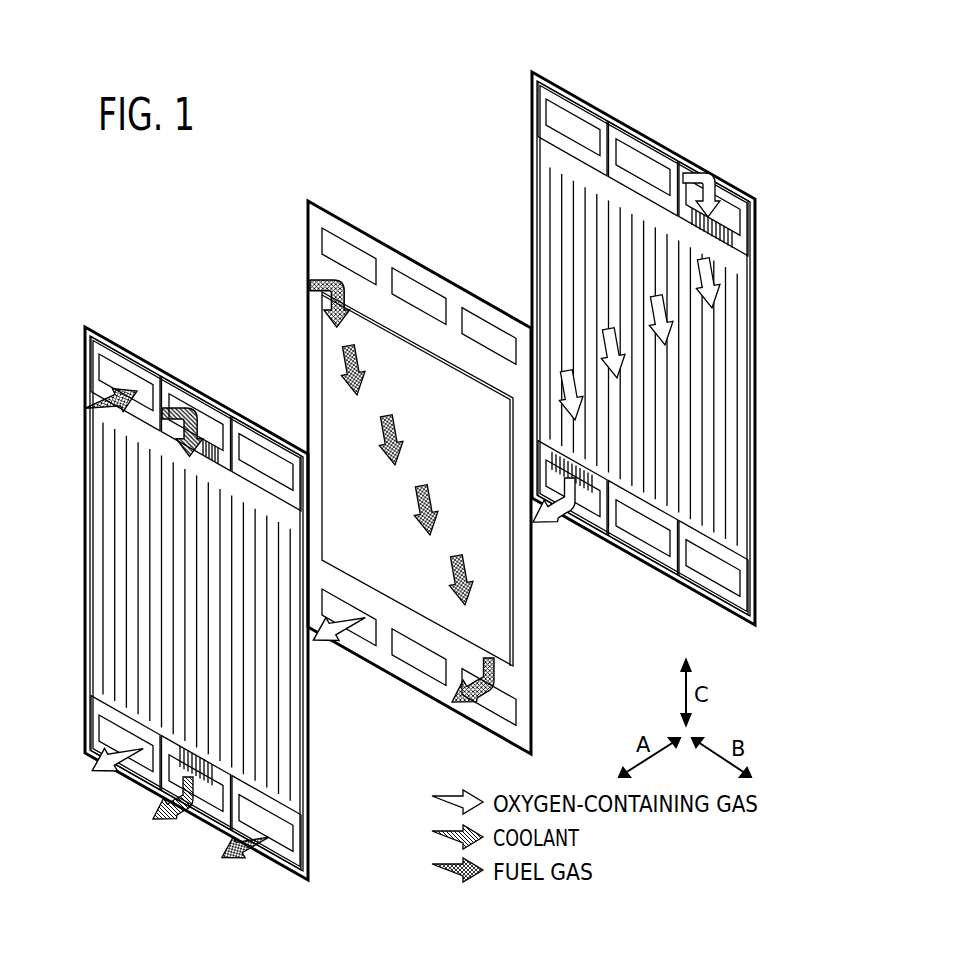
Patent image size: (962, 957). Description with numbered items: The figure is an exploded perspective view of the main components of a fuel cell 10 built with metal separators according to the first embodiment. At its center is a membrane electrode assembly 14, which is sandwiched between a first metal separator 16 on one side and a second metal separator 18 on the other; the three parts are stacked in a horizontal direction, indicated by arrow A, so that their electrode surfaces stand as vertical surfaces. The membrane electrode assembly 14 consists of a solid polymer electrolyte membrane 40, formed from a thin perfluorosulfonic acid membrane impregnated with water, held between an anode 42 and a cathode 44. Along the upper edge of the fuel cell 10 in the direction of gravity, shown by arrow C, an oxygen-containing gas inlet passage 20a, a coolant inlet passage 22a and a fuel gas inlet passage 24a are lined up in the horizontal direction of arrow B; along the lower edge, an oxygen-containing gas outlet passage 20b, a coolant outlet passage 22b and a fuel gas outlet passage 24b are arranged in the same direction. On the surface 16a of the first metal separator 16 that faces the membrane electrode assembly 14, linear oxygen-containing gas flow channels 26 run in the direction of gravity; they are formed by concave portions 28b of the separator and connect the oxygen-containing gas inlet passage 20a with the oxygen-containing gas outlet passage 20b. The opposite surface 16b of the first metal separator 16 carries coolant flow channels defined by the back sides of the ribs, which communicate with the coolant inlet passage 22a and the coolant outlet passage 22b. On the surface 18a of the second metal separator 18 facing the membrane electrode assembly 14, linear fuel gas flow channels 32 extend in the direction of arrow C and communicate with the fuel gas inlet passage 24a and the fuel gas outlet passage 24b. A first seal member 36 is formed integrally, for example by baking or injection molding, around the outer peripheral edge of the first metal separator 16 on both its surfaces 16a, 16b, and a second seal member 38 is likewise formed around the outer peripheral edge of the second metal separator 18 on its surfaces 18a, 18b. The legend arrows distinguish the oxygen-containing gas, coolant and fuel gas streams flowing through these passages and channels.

The fuel cell 10 is at (170, 181).
The membrane electrode assembly 14 is at (306, 199).
The first metal separator 16 is at (530, 70).
The second metal separator 18 is at (83, 325).
The oxygen-containing gas inlet passage 20a is at (262, 460).
The oxygen-containing gas outlet passage 20b is at (143, 757).
The coolant inlet passage 22a is at (205, 423).
The coolant outlet passage 22b is at (210, 797).
The fuel gas inlet passage 24a is at (128, 380).
The fuel gas outlet passage 24b is at (280, 833).
The oxygen-containing gas flow channels 26 is at (590, 257).
The concave portions 28b is at (586, 485).
The fuel gas flow channels 32 is at (137, 552).
The first seal member 36 is at (538, 162).
The second seal member 38 is at (93, 620).
The solid polymer electrolyte membrane 40 is at (385, 261).
The anode 42 is at (333, 337).
The cathode 44 is at (333, 363).
The surface of first metal separator facing the membrane electrode assembly 16a is at (742, 496).
The surface of first metal separator 16b is at (742, 474).
The surface of second metal separator facing the membrane electrode assembly 18a is at (295, 728).
The surface of second metal separator 18b is at (296, 752).